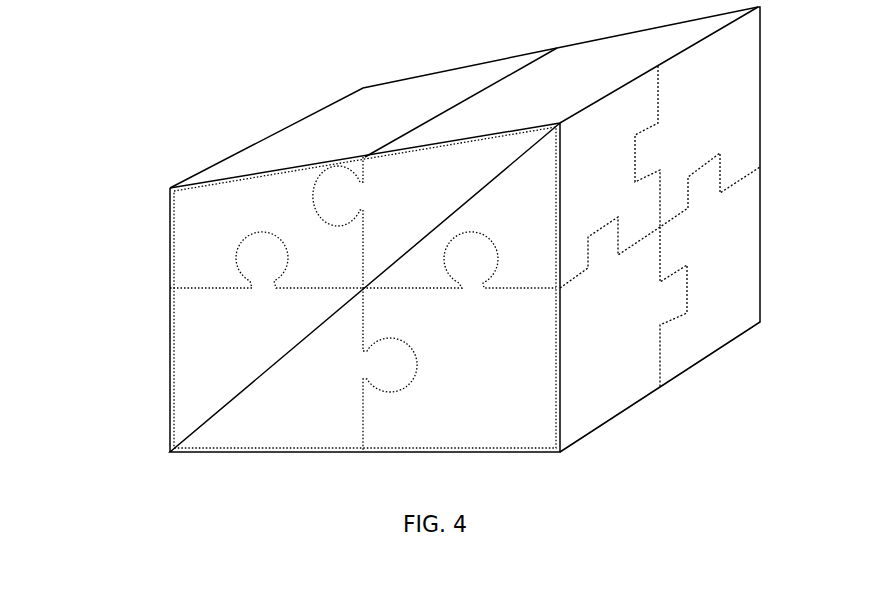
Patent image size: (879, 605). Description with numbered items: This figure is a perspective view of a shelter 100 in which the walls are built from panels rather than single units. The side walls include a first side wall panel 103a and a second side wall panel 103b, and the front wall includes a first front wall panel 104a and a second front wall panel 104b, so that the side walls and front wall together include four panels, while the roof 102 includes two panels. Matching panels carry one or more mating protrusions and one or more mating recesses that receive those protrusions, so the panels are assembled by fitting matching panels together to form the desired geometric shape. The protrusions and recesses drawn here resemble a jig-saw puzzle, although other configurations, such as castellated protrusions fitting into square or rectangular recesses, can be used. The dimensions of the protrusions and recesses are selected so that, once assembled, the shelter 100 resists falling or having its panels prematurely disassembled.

The shelter 100 is at (260, 90).
The roof 102 is at (416, 110).
The first side wall panel 103a is at (185, 376).
The second side wall panel 103b is at (185, 253).
The first front wall panel 104a is at (623, 378).
The second front wall panel 104b is at (722, 315).